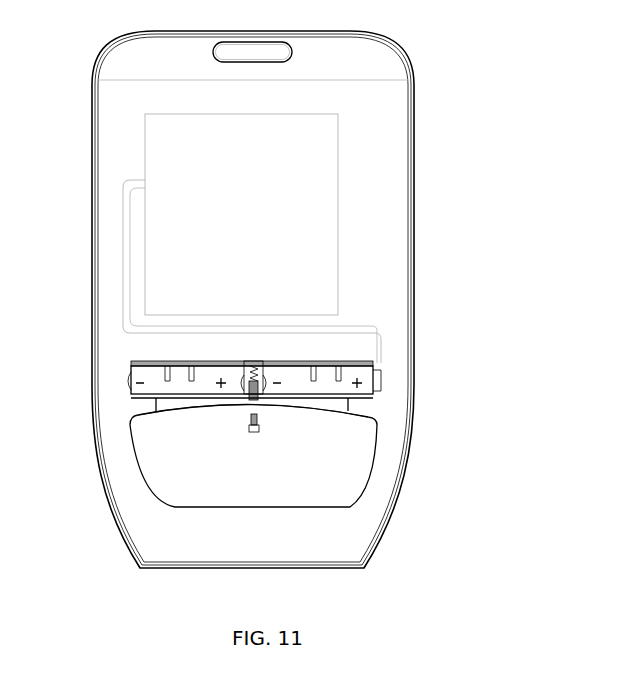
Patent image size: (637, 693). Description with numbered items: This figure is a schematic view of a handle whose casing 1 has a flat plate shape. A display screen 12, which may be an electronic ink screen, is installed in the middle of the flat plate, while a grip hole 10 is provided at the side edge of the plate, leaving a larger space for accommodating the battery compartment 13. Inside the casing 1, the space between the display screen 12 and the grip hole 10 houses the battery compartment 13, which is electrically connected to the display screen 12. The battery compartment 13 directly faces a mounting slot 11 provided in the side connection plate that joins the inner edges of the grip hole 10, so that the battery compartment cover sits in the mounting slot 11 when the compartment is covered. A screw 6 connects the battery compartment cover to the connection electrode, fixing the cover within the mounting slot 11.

The casing 1 is at (370, 90).
The display screen 12 is at (313, 205).
The battery compartment 13 is at (344, 349).
The grip hole 10 is at (333, 470).
The mounting slot 11 is at (171, 421).
The screw 6 is at (258, 430).